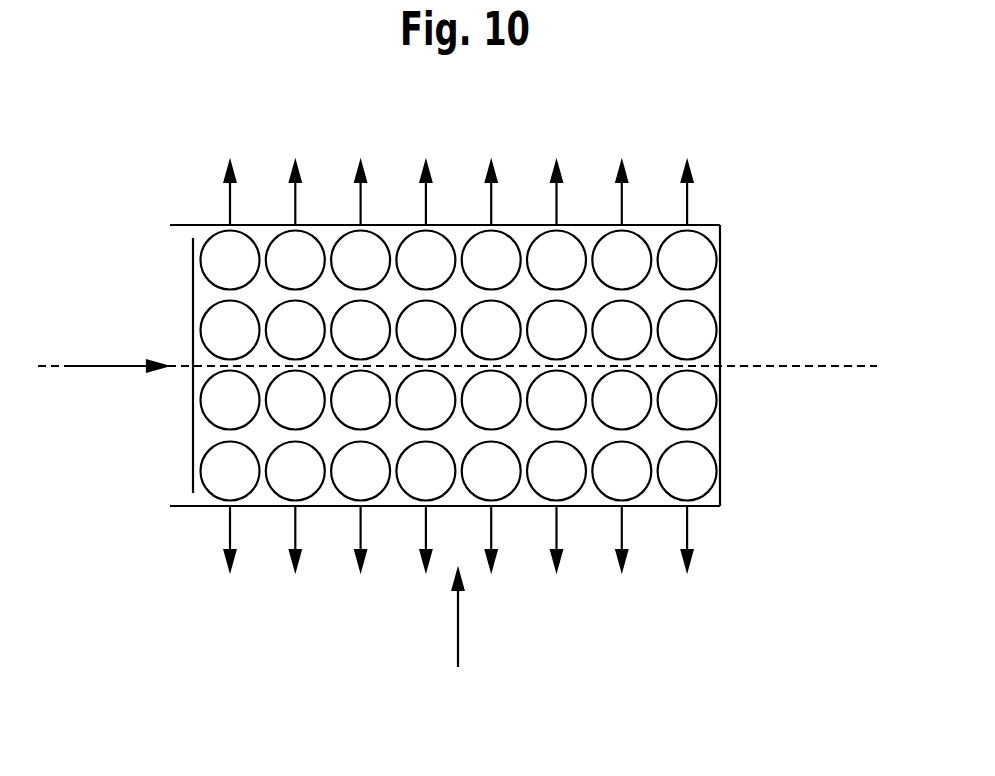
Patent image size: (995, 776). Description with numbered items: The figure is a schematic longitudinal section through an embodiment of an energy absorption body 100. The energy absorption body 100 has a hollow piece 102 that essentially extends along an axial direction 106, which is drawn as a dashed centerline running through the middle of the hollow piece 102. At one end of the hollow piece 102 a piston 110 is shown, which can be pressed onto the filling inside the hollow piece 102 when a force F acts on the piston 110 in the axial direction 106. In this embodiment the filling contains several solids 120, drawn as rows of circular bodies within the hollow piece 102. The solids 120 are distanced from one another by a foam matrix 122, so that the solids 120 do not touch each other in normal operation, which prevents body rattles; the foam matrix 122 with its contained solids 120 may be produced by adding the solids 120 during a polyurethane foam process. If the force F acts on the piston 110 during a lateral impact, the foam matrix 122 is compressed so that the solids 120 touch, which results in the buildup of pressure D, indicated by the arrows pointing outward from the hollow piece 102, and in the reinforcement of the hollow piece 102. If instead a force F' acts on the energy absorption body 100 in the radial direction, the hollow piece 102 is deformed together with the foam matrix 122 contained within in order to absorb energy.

The energy absorption body 100 is at (657, 143).
The hollow piece 102 is at (195, 222).
The axial direction 106 is at (860, 363).
The piston 110 is at (192, 283).
The solids 120 is at (700, 268).
The foam matrix 122 is at (320, 498).
The pressure D is at (687, 198).
The force F is at (117, 410).
The radial force F' is at (497, 618).